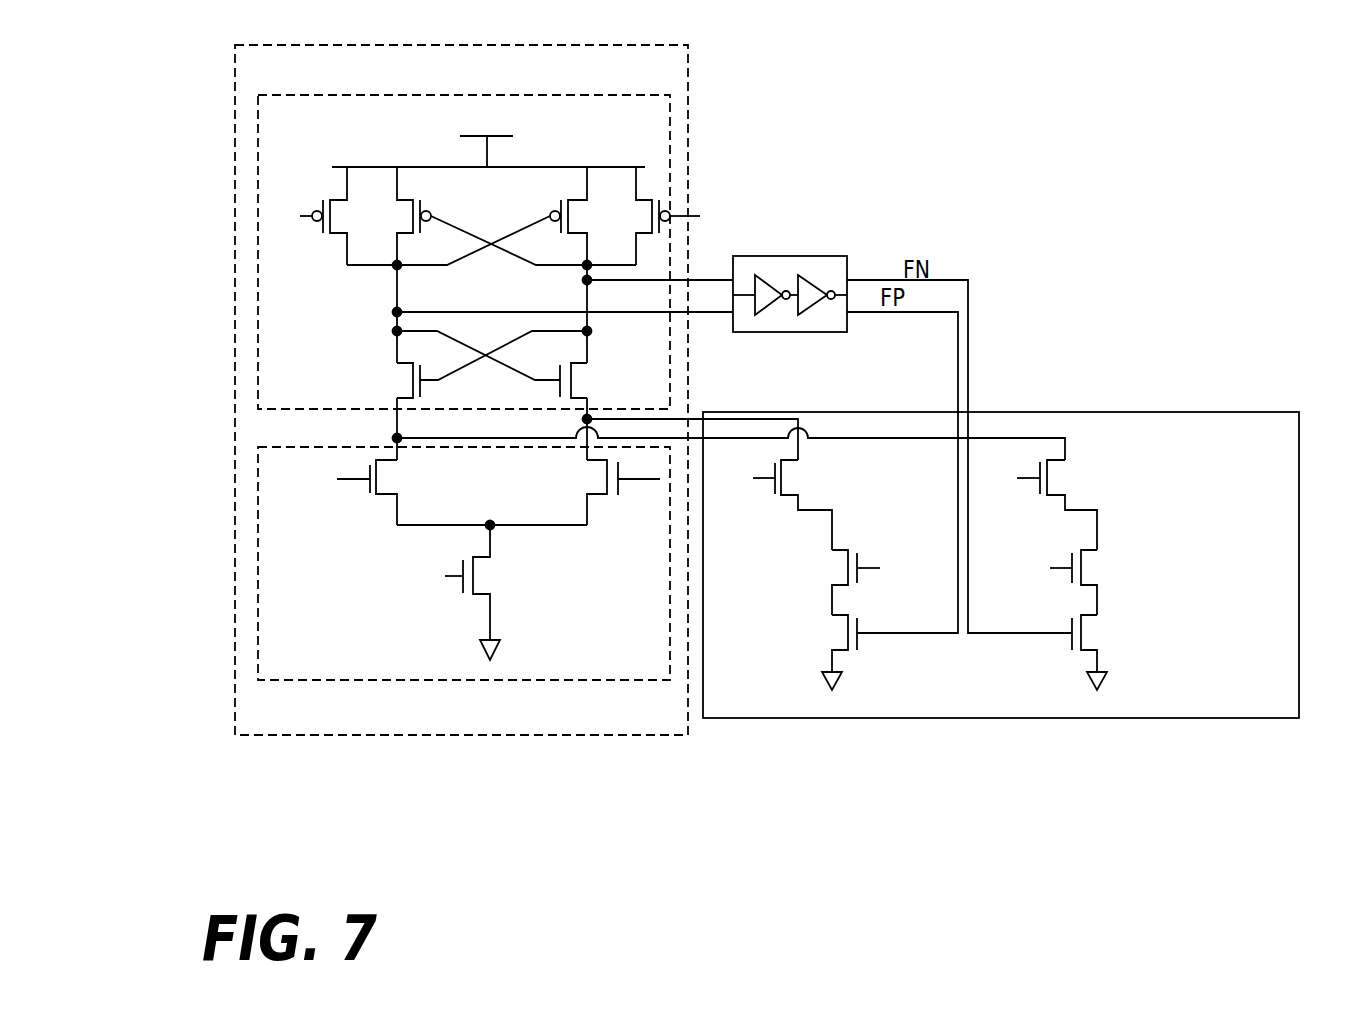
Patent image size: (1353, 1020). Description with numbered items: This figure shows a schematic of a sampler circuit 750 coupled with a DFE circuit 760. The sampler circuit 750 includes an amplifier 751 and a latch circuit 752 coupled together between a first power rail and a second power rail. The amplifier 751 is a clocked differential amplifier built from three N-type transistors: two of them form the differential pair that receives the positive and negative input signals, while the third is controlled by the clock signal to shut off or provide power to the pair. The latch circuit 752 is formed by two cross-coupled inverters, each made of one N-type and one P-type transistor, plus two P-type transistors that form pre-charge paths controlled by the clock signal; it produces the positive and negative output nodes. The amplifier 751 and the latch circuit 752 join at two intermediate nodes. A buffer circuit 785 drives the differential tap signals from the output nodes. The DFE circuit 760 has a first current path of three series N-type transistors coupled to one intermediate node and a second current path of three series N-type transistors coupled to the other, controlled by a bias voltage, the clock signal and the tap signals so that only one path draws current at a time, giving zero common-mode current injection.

The sampler circuit 750 is at (681, 79).
The latch circuit 752 is at (664, 126).
The amplifier 751 is at (640, 646).
The buffer circuit 785 is at (822, 256).
The DFE circuit 760 is at (1266, 697).